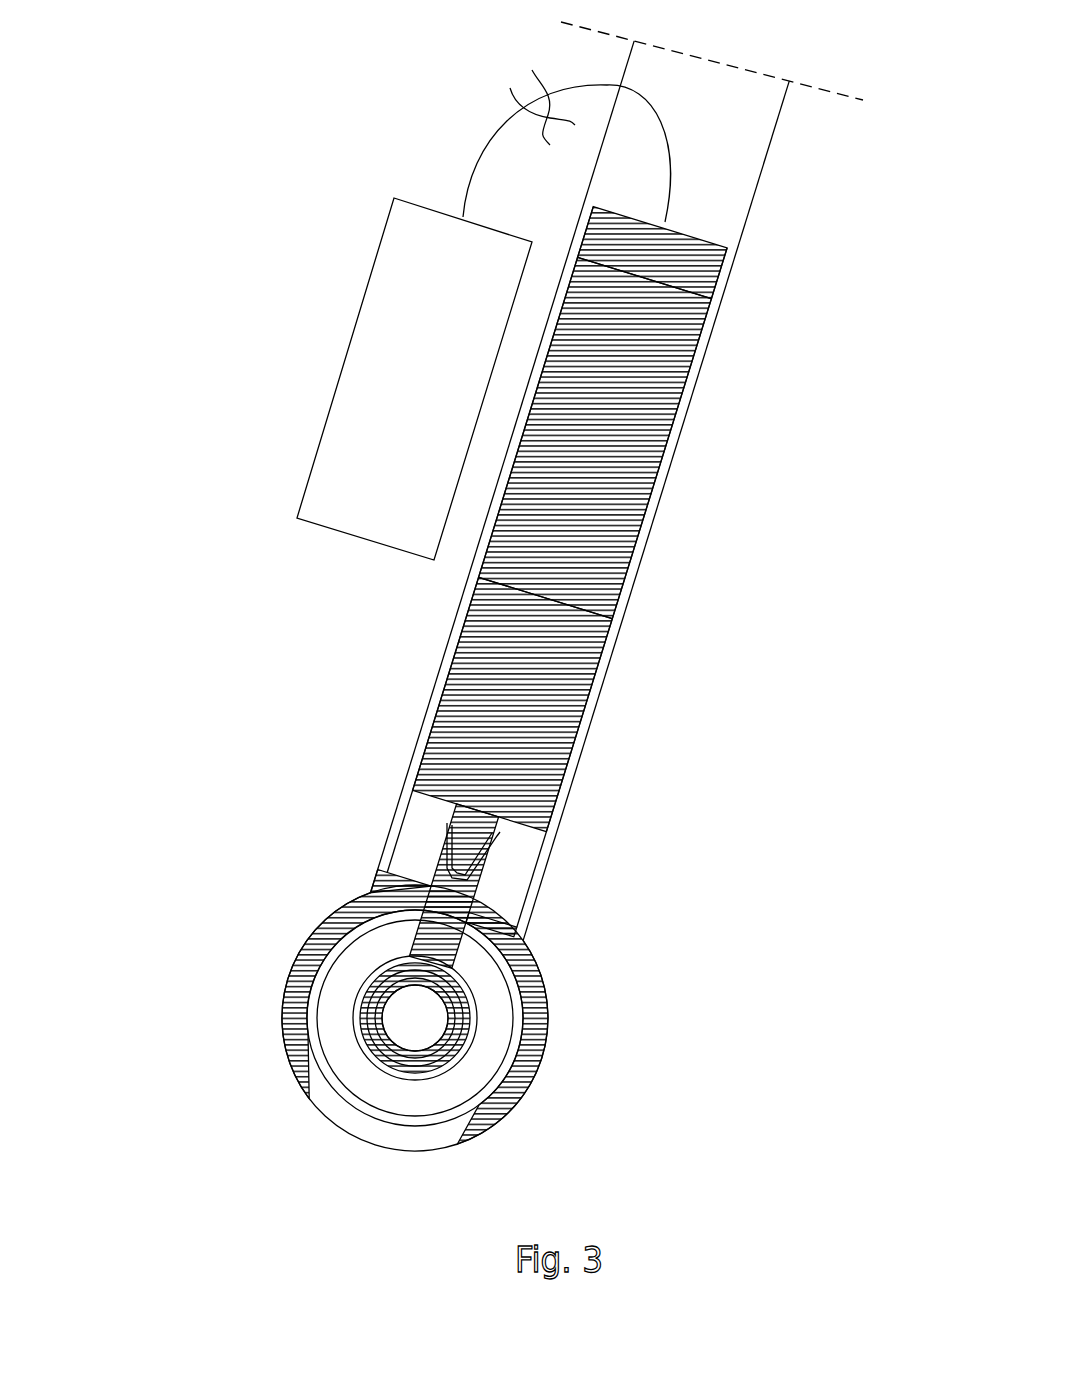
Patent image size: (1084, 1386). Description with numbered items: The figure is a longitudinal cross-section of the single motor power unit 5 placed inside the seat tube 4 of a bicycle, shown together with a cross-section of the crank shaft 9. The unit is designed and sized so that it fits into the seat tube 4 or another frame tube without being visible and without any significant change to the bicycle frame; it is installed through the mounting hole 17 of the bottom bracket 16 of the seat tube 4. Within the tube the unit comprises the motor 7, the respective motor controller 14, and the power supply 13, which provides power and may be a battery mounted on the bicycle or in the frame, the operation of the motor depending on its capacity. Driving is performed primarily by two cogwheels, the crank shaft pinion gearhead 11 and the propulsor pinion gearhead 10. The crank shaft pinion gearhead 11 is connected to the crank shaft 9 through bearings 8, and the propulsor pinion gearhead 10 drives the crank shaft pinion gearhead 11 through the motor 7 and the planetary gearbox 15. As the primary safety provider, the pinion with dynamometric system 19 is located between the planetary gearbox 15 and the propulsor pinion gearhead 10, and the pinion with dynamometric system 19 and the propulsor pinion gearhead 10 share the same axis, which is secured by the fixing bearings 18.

The seat tube 4 is at (697, 163).
The single motor power unit 5 is at (717, 330).
The motor 7 is at (592, 520).
The bearings 8 is at (367, 1028).
The crank shaft 9 is at (449, 1033).
The propulsor pinion gearhead 10 is at (437, 938).
The crank shaft pinion gearhead 11 is at (350, 975).
The power supply 13 is at (378, 492).
The motor controller 14 is at (687, 263).
The planetary gearbox 15 is at (542, 741).
The bottom bracket 16 is at (297, 1045).
The mounting hole 17 is at (365, 1127).
The fixing bearings 18 is at (508, 922).
The pinion with dynamometric system 19 is at (470, 840).